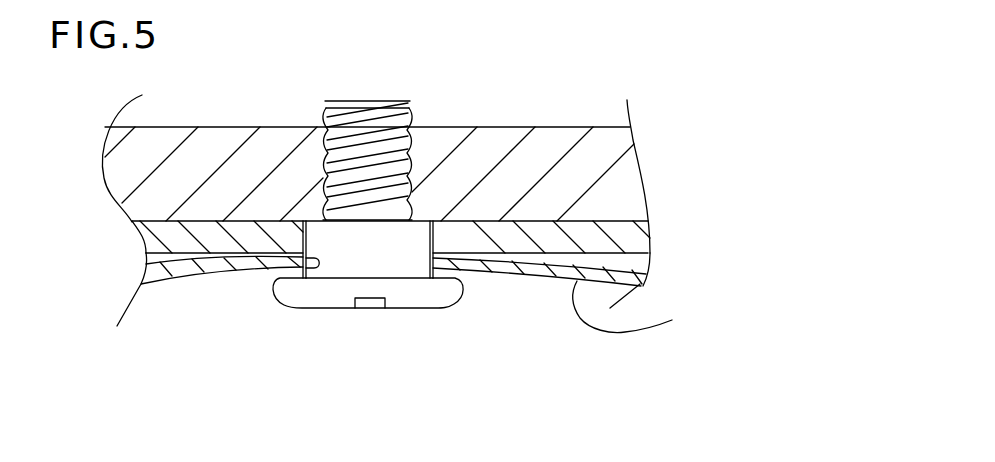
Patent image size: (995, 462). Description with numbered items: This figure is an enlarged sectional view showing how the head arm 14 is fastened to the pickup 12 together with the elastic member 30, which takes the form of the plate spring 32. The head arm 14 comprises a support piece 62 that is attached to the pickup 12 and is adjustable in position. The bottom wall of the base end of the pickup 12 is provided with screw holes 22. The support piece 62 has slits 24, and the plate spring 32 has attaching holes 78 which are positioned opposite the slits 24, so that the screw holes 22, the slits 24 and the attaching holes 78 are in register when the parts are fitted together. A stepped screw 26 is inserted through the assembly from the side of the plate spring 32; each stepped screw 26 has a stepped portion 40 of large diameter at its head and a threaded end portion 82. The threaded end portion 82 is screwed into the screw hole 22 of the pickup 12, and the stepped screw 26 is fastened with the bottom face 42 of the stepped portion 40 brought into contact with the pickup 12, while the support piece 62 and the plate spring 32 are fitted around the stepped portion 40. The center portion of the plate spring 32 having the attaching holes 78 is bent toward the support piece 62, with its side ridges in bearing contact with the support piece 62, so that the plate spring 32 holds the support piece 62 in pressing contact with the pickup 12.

The pickup 12 is at (617, 183).
The support piece 62 is at (476, 247).
The head arm 14 is at (625, 238).
The elastic member 30 is at (464, 298).
The plate spring 32 is at (672, 320).
The screw holes 22 is at (365, 139).
The threaded end portion 82 is at (390, 132).
The bottom faces of stepped portions 42 is at (423, 220).
The slits 24 is at (307, 228).
The attaching holes 78 is at (302, 303).
The stepped portion 40 is at (412, 255).
The stepped screws 26 is at (382, 318).